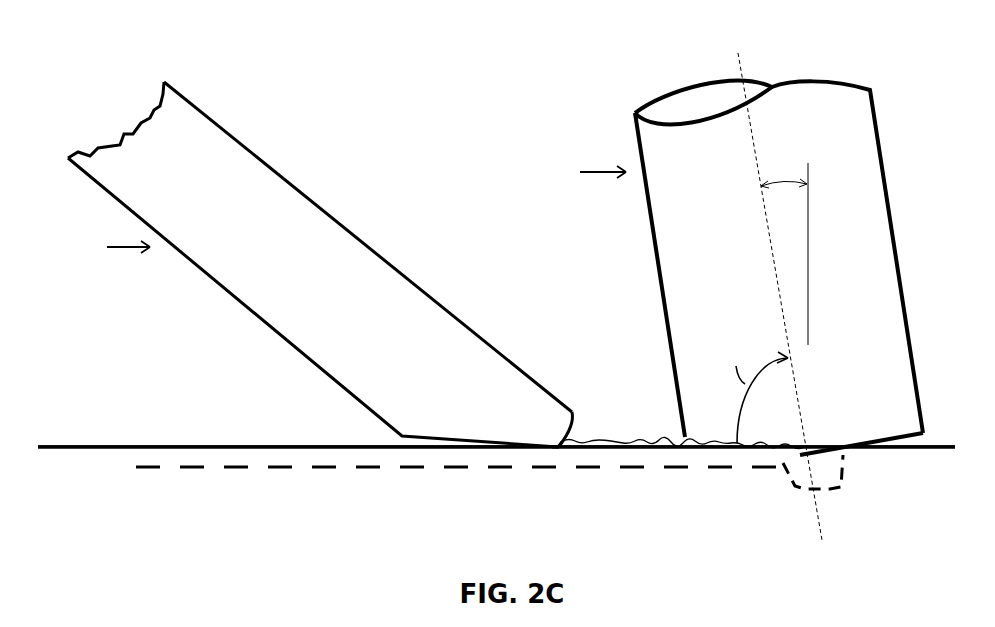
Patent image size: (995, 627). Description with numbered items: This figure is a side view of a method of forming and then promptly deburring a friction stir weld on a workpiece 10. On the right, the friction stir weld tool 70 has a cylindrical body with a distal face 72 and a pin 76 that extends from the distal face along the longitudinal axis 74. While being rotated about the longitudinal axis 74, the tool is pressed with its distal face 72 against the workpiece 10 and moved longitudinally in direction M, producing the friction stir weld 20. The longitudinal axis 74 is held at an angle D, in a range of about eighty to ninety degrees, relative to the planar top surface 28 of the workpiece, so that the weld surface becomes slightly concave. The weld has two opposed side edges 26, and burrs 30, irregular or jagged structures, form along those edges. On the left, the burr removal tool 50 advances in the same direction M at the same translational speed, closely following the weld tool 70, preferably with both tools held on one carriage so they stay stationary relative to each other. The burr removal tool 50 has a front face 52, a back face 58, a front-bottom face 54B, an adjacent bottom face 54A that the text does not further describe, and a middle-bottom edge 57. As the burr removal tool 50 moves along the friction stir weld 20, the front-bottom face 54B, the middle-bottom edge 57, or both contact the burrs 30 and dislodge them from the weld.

The workpiece 10 is at (86, 346).
The friction stir weld 20 is at (127, 462).
The side edges 26 is at (320, 447).
The friction stir weld surface 28 is at (258, 447).
The burrs 30 is at (602, 438).
The burr removal tool 50 is at (350, 212).
The front face 52 is at (458, 320).
The lower edge 54A is at (418, 437).
The front-bottom face 54B is at (568, 432).
The middle-bottom edge 57 is at (558, 449).
The back face 58 is at (224, 130).
The friction stir weld tool 70 is at (888, 194).
The distal face 72 is at (877, 447).
The longitudinal axis 74 is at (738, 67).
The pin 76 is at (835, 481).